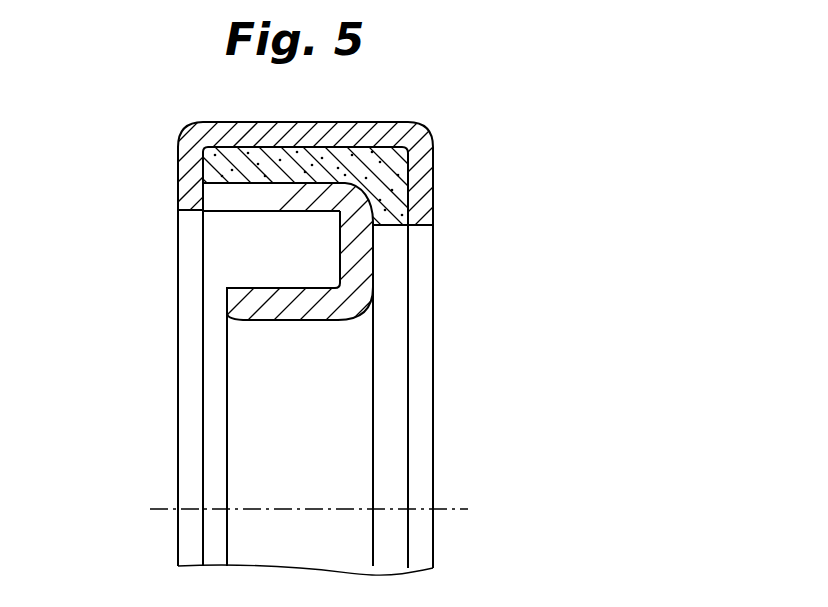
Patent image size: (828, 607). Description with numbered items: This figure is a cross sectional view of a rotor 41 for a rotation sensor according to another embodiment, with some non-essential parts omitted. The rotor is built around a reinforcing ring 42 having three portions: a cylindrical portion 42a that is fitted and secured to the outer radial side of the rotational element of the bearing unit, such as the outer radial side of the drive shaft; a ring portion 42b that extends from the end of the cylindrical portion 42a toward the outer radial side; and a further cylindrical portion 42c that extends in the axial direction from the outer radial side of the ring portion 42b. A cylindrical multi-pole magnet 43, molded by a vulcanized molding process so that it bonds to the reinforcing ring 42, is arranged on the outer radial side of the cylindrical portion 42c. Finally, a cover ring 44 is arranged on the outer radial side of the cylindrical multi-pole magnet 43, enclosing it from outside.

The rotor for the rotation sensor 41 is at (184, 106).
The reinforcing ring 42 is at (613, 207).
The cylindrical portion 42a is at (303, 307).
The ring portion 42b is at (347, 257).
The cylindrical portion 42c is at (270, 201).
The cylindrical multi-pole magnet 43 is at (400, 190).
The cover ring 44 is at (412, 143).